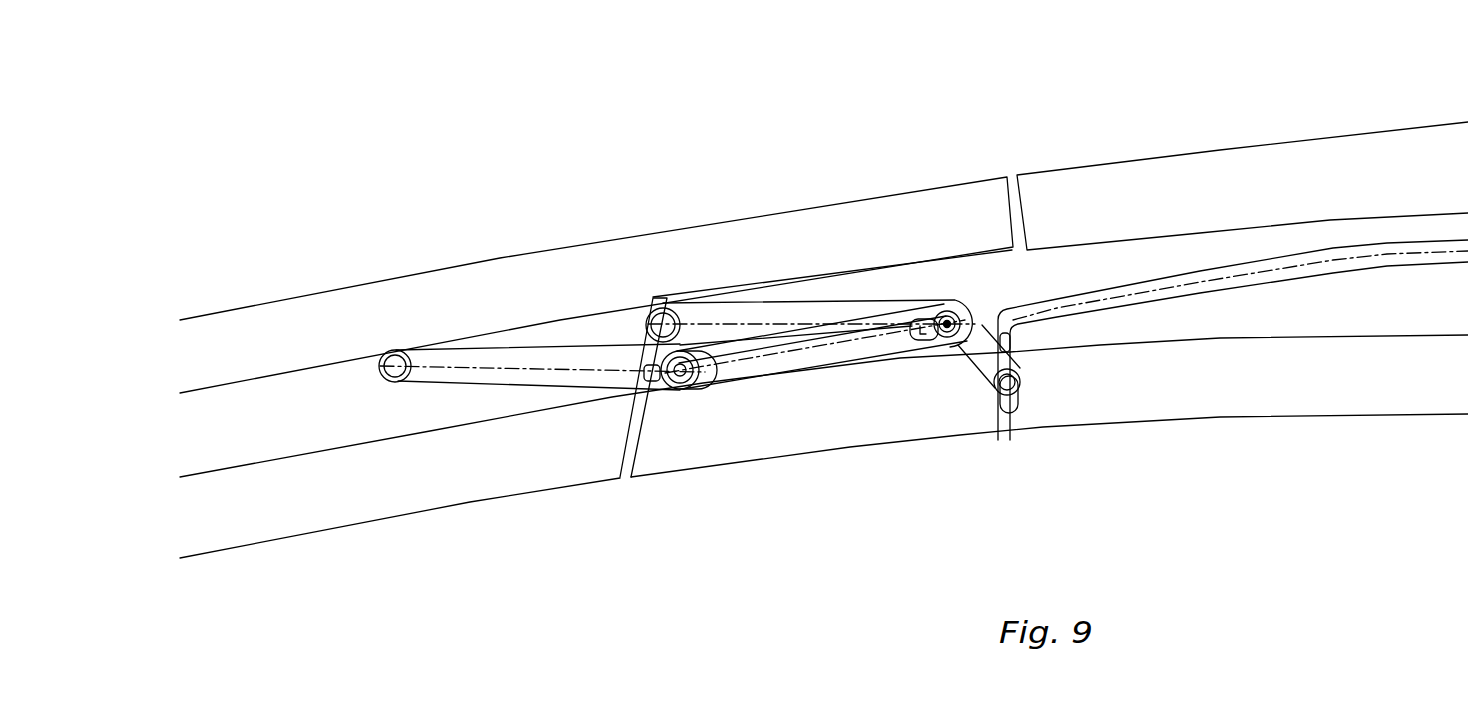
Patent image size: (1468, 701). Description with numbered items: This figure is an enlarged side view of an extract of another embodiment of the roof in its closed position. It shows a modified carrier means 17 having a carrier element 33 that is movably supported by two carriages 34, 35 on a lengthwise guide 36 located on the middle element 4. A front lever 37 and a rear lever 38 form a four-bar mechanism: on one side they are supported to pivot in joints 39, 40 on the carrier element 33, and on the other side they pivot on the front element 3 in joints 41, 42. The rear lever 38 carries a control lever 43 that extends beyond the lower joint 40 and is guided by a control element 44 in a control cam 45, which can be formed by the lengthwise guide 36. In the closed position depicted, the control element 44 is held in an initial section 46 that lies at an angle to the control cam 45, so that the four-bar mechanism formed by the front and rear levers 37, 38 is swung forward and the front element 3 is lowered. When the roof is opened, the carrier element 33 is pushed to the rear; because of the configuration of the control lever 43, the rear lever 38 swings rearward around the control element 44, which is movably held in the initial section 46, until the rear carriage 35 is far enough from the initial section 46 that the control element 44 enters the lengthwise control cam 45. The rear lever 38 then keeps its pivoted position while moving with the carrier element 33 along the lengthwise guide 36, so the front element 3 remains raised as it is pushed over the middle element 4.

The front element 3 is at (540, 252).
The middle element 4 is at (1216, 150).
The carrier means 17 is at (607, 400).
The carrier element 33 is at (850, 362).
The carriage 34 is at (699, 382).
The rear carriage 35 is at (924, 346).
The lengthwise guide 36 is at (1291, 270).
The front lever 37 is at (529, 377).
The rear lever 38 is at (776, 312).
The joint 39 is at (681, 372).
The lower joint 40 is at (946, 320).
The joint 41 is at (393, 363).
The joint 42 is at (664, 322).
The control lever 43 is at (979, 366).
The control element 44 is at (1004, 384).
The control cam 45 is at (1057, 313).
The initial section 46 is at (1007, 343).